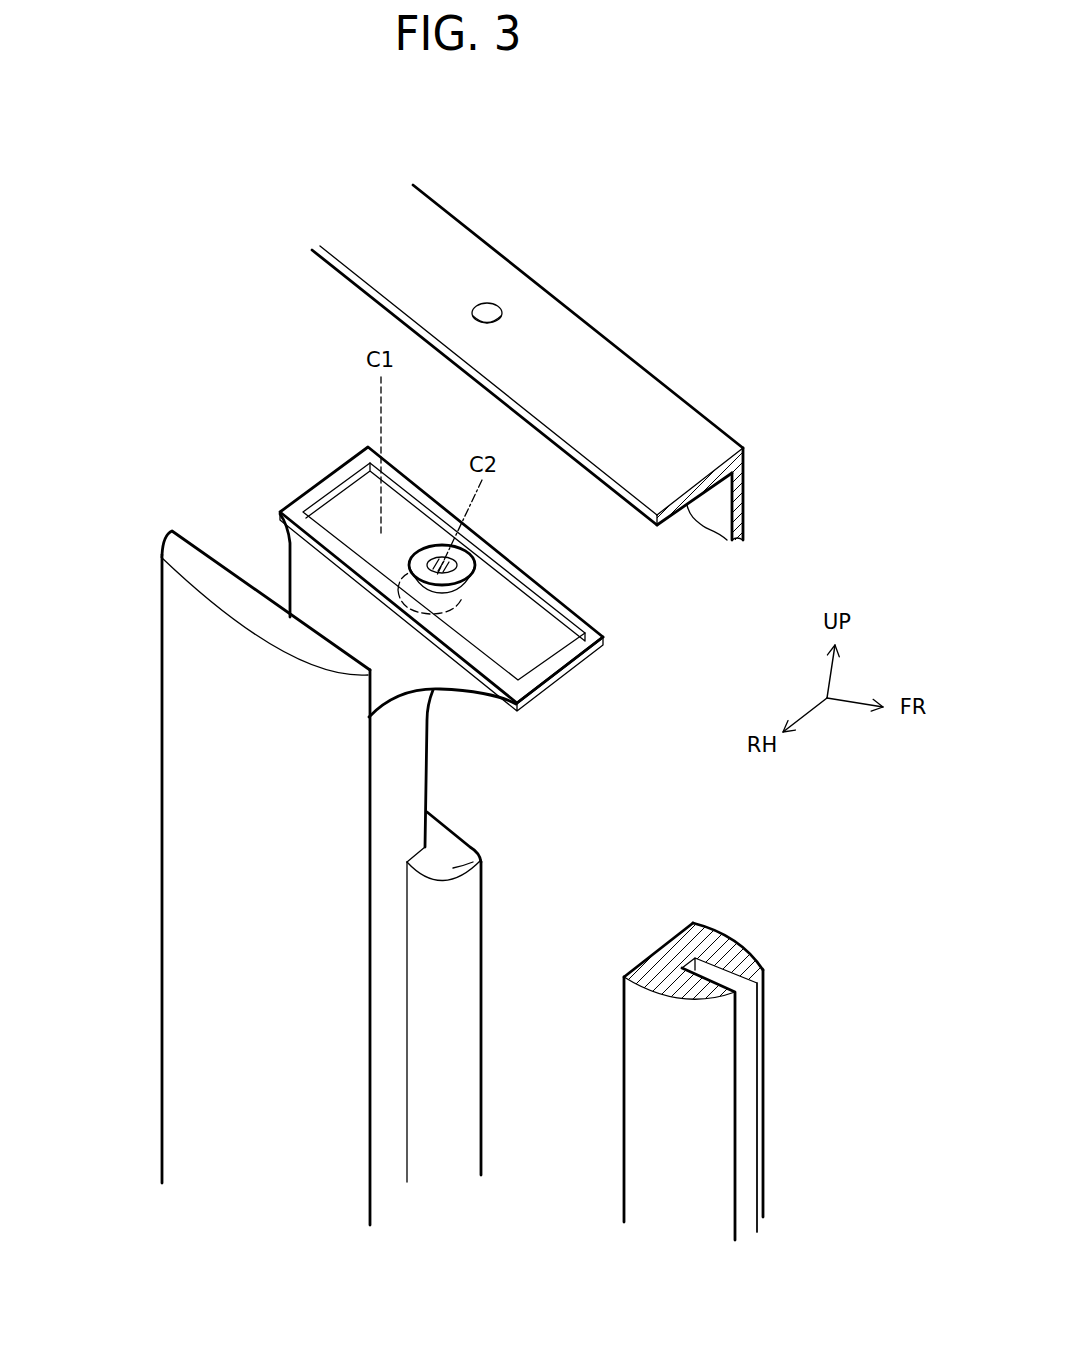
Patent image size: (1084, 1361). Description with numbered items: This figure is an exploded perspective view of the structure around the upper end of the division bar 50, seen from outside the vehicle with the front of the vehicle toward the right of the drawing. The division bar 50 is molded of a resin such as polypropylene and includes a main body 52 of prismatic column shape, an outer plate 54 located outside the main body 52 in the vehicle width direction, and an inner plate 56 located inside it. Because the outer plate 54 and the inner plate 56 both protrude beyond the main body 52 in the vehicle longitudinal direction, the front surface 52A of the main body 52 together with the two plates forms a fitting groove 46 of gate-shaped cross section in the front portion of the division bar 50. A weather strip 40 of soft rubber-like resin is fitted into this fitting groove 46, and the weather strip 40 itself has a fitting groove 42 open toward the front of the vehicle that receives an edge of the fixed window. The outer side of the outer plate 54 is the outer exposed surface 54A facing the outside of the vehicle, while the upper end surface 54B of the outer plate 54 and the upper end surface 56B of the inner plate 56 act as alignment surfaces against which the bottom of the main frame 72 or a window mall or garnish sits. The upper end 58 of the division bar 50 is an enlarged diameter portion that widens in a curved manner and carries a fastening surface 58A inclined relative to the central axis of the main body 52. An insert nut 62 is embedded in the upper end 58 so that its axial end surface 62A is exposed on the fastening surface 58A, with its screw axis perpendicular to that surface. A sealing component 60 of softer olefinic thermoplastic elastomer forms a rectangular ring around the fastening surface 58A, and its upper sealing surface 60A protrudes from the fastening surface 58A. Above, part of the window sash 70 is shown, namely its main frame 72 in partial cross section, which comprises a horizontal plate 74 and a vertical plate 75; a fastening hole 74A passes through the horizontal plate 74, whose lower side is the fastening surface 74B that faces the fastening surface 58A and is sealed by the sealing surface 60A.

The weather strip 40 is at (734, 926).
The fitting groove 42 is at (745, 1028).
The fitting groove 46 is at (424, 1083).
The division bar 50 is at (113, 638).
The main body 52 is at (388, 817).
The front surface 52A is at (393, 917).
The outer plate 54 is at (156, 840).
The outer exposed surface 54A is at (207, 1120).
The upper end surface 54B is at (220, 583).
The inner plate 56 is at (495, 975).
The upper end surface 56B is at (481, 861).
The upper end 58 is at (430, 718).
The fastening surface 58A is at (343, 508).
The sealing component 60 is at (575, 671).
The sealing surface 60A is at (592, 632).
The insert nut 62 is at (462, 597).
The axial end surface 62A is at (466, 566).
The window sash 70 is at (595, 324).
The main frame 72 is at (572, 384).
The horizontal plate 74 is at (643, 417).
The fastening hole 74A is at (489, 312).
The fastening surface 74B is at (670, 519).
The vertical plate 75 is at (743, 492).